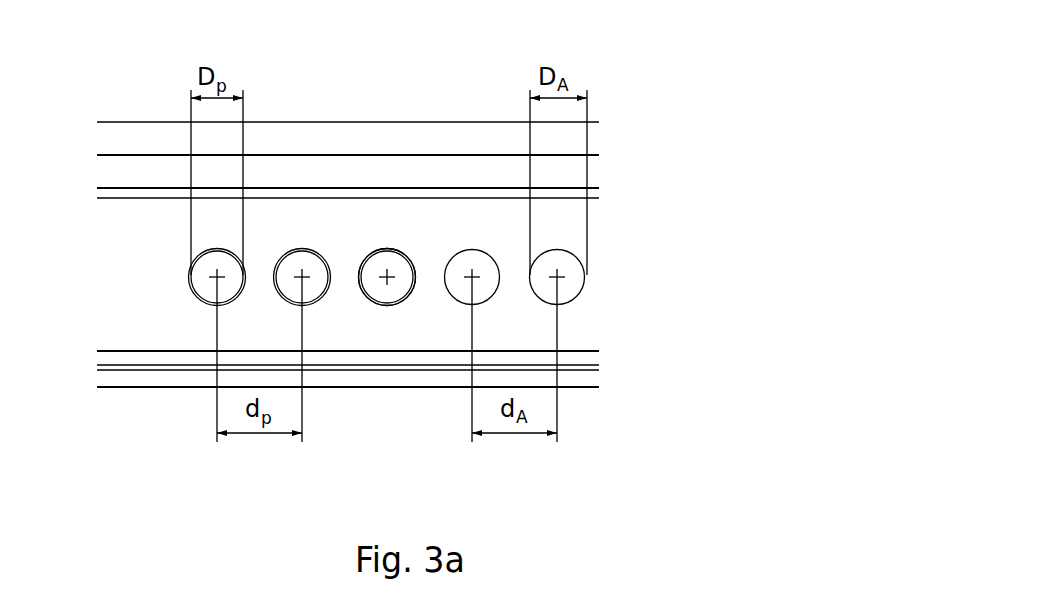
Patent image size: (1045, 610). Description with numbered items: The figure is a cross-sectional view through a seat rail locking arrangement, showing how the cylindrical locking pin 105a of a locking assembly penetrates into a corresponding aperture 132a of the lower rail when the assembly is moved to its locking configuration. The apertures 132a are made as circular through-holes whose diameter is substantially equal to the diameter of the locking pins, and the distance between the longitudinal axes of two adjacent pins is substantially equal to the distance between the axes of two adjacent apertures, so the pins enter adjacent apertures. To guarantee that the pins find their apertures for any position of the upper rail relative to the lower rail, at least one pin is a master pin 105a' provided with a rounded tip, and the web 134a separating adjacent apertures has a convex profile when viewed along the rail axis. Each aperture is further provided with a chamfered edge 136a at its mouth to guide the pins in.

The locking pin 105a is at (146, 368).
The web 134a is at (344, 283).
The chamfered edge 136a is at (400, 261).
The master pin 105a' is at (519, 168).
The aperture 132a is at (485, 263).